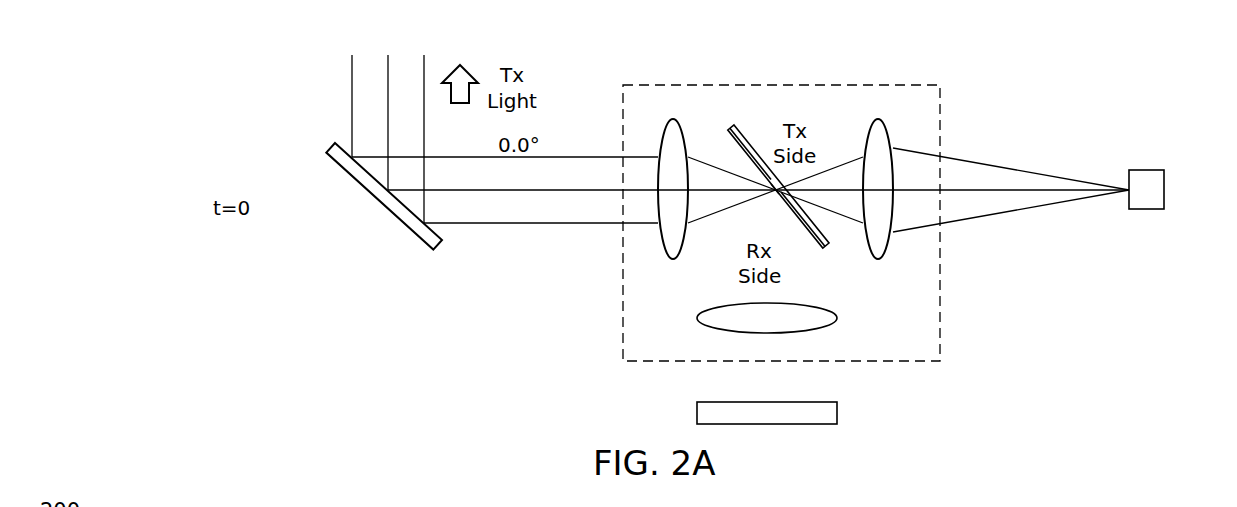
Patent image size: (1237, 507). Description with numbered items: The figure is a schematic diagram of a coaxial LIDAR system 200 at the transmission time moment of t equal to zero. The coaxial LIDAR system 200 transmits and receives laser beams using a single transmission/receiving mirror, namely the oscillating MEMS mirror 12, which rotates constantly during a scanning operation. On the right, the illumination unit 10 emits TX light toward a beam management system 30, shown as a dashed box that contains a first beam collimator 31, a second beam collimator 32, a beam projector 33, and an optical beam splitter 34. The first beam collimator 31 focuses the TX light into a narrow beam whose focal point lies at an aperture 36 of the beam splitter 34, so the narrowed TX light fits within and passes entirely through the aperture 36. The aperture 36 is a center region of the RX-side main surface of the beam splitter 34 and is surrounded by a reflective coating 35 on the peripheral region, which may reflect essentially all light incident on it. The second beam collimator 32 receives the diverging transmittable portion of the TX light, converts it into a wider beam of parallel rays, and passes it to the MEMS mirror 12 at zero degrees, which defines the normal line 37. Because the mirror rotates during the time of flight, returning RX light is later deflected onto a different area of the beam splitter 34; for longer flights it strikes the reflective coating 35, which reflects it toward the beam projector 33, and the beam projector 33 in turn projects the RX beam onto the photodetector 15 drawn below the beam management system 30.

The coaxial LIDAR system 200 is at (122, 72).
The MEMS mirror 12 is at (418, 237).
The normal line 37 is at (508, 190).
The beam management system 30 is at (925, 85).
The second beam collimator 32 is at (673, 118).
The first beam collimator 31 is at (878, 118).
The optical beam splitter 34 is at (748, 135).
The reflective coating 35 is at (715, 143).
The aperture 36 is at (769, 201).
The beam projector 33 is at (837, 318).
The photodetector 15 is at (837, 413).
The illumination unit 10 is at (1165, 192).